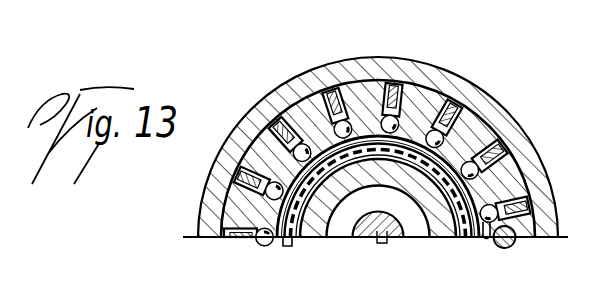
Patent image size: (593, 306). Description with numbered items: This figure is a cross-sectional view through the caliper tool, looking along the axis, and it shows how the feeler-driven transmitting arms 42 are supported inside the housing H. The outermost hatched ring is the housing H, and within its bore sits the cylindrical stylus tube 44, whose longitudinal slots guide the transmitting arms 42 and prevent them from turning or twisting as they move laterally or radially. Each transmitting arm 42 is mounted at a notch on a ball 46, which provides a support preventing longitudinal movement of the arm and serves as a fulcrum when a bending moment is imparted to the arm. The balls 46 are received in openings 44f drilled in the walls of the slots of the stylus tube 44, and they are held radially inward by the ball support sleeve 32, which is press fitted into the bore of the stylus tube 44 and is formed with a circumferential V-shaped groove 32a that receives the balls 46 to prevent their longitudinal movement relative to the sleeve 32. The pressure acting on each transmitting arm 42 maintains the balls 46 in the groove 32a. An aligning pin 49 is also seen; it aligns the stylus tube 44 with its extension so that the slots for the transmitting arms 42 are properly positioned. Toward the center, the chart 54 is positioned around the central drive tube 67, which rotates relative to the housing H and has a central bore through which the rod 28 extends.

The transmitting arm 42 is at (341, 92).
The circumferential V-shaped groove 32a is at (452, 132).
The openings 44f is at (235, 179).
The housing H is at (212, 196).
The stylus tube 44 is at (228, 209).
The ball 46 is at (250, 240).
The ball support sleeve 32 is at (277, 243).
The chart 54 is at (289, 234).
The central drive tube 67 is at (320, 226).
The rod 28 is at (385, 235).
The aligning pin 49 is at (506, 248).